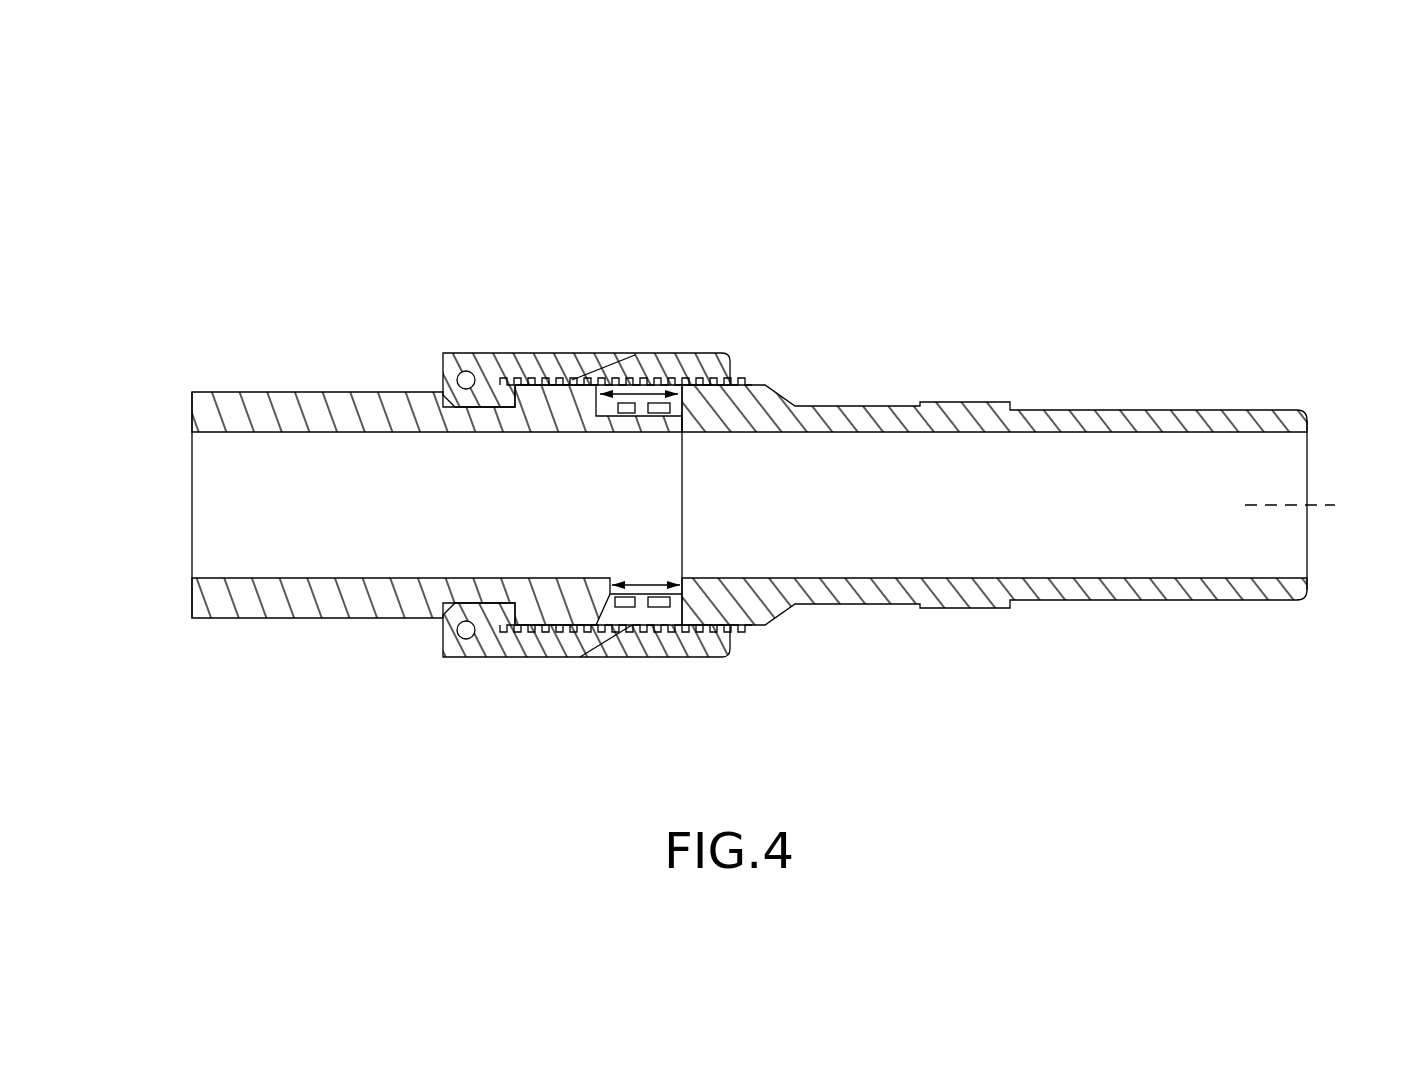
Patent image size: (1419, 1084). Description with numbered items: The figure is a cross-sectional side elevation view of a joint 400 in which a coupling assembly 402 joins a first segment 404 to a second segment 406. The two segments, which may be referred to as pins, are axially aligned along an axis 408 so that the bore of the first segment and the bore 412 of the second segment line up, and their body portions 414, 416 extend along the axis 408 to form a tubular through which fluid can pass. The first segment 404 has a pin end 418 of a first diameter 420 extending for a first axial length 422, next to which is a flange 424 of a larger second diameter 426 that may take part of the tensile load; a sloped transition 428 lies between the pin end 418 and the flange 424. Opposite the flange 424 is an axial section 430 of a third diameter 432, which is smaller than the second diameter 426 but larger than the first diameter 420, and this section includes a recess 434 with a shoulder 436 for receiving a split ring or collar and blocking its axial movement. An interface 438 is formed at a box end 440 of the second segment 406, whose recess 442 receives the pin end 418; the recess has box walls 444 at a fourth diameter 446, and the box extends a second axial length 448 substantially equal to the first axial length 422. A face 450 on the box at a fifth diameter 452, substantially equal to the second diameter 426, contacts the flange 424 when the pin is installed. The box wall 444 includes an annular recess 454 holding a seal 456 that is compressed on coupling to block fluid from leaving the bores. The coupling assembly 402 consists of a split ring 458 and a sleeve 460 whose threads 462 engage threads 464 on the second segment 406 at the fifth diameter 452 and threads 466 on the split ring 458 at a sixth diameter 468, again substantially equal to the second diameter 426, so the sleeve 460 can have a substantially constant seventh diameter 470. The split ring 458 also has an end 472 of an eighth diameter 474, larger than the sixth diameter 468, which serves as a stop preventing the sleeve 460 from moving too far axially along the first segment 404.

The joint 400 is at (799, 218).
The coupling assembly 402 is at (537, 325).
The first segment 404 is at (197, 446).
The second segment 406 is at (1303, 452).
The axis 408 is at (1333, 505).
The bore 412 is at (198, 578).
The body portion 414 is at (268, 602).
The body portion 416 is at (1180, 597).
The pin end 418 is at (618, 453).
The first diameter 420 is at (637, 578).
The first axial length 422 is at (628, 584).
The flange 424 is at (547, 657).
The second diameter 426 is at (562, 624).
The transition 428 is at (594, 415).
The axial section 430 is at (466, 436).
The third diameter 432 is at (383, 392).
The recess 434 is at (498, 434).
The shoulder 436 is at (447, 400).
The interface 438 is at (690, 612).
The box end 440 is at (707, 417).
The recess 442 is at (736, 535).
The box wall 444 is at (757, 378).
The fourth diameter 446 is at (663, 416).
The second axial length 448 is at (656, 402).
The face 450 is at (614, 642).
The fifth diameter 452 is at (633, 377).
The annular recess 454 is at (653, 612).
The seal 456 is at (676, 583).
The split ring 458 is at (442, 370).
The sleeve 460 is at (727, 640).
The threads 462 is at (752, 630).
The threads 464 is at (768, 627).
The threads 466 is at (503, 377).
The sixth diameter 468 is at (517, 386).
The seventh diameter 470 is at (500, 633).
The end 472 is at (447, 642).
The eighth diameter 474 is at (452, 318).